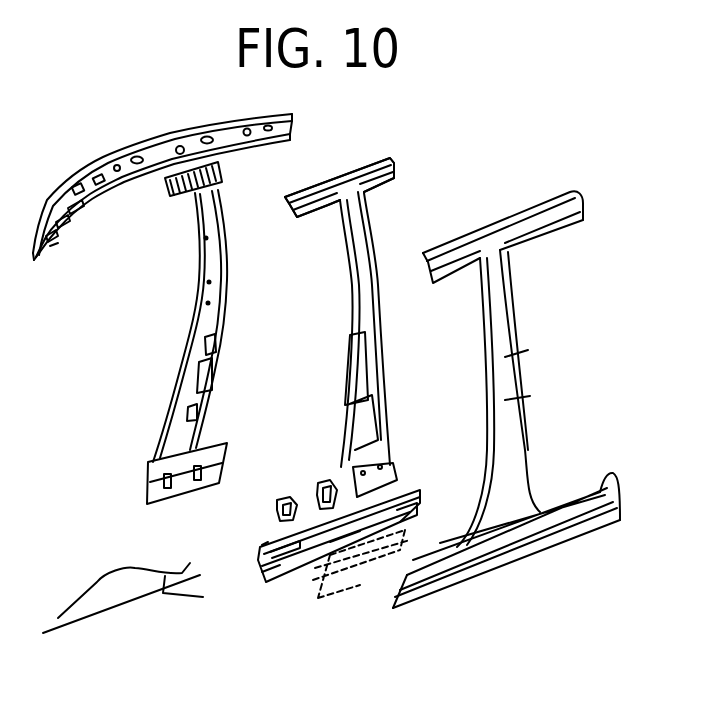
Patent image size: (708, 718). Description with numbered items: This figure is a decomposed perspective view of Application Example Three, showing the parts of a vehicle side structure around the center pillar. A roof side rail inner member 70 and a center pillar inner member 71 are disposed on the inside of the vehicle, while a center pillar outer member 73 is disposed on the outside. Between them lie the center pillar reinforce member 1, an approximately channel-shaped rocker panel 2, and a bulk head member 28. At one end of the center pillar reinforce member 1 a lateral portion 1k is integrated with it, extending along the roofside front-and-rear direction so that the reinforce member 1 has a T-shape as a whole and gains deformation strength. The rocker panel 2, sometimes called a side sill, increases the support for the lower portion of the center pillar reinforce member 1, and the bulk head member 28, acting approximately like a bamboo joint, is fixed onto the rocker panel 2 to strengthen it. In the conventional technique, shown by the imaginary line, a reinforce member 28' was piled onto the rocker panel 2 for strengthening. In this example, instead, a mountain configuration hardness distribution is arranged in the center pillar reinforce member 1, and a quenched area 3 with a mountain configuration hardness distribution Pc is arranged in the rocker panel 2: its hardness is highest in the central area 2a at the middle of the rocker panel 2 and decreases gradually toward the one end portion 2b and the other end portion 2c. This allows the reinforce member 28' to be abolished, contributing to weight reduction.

The roof side rail inner member 70 is at (132, 193).
The center pillar inner member 71 is at (212, 260).
The lateral portion 1k is at (360, 163).
The center pillar reinforce member 1 is at (382, 317).
The center pillar outer member 73 is at (517, 353).
The rocker panel 2 is at (283, 580).
The central area 2a is at (350, 547).
The one end portion 2b is at (262, 580).
The other end portion 2c is at (427, 497).
The quenched area 3 is at (267, 540).
The bulk head member 28 is at (298, 474).
The reinforce member 28' is at (361, 598).
The mountain configuration hardness distribution Pc is at (97, 590).